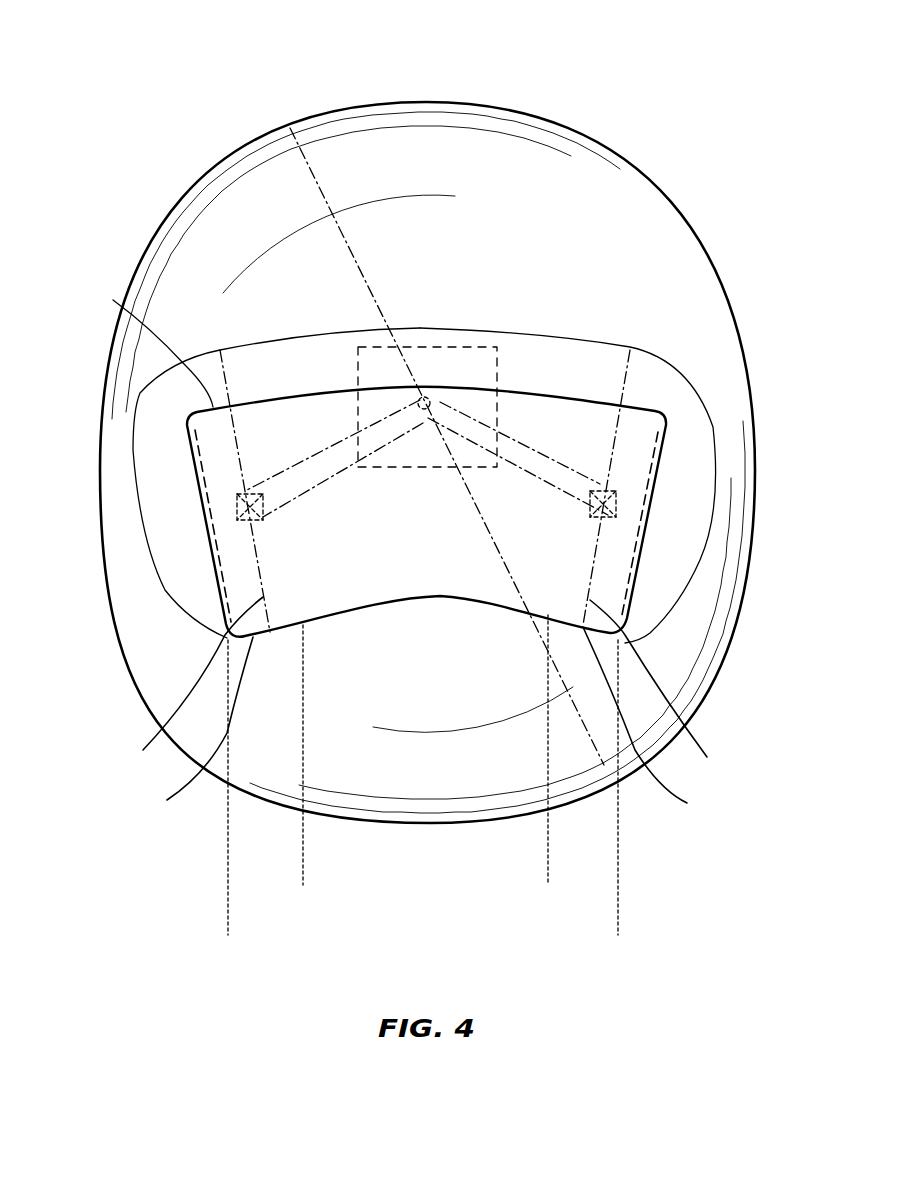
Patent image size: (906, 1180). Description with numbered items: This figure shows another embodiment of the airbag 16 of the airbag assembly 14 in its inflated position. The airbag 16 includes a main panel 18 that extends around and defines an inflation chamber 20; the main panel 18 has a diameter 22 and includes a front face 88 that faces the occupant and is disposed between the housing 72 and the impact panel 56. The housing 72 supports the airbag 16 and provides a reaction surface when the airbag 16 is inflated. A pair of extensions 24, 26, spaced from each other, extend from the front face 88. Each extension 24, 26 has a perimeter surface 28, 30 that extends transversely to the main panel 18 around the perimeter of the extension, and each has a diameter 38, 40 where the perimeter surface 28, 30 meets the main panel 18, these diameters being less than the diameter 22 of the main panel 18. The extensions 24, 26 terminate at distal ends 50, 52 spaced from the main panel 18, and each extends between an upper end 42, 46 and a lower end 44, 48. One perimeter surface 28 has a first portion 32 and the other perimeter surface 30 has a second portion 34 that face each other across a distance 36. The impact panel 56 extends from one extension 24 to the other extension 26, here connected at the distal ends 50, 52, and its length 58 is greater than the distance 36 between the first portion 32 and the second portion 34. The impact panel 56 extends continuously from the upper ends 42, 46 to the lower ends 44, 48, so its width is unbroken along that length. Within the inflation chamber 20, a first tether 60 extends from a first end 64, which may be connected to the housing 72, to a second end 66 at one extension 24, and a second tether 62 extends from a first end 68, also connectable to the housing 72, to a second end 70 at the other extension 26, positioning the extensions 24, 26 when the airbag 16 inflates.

The airbag assembly 14 is at (200, 163).
The airbag 16 is at (316, 88).
The main panel 18 is at (510, 160).
The inflation chamber 20 is at (418, 145).
The diameter of the main panel 22 is at (600, 765).
The extension 24 is at (160, 400).
The extension 26 is at (640, 367).
The perimeter surface 28 is at (163, 460).
The perimeter surface 30 is at (687, 437).
The first portion 32 is at (327, 390).
The second portion 34 is at (543, 387).
The distance 36 is at (548, 872).
The diameter 38 is at (143, 750).
The diameter 40 is at (707, 757).
The upper end 42 is at (113, 300).
The lower end 44 is at (167, 800).
The upper end 46 is at (683, 367).
The lower end 48 is at (687, 803).
The distal end 50 is at (232, 537).
The distal end 52 is at (623, 540).
The impact panel 56 is at (350, 413).
The length of the impact panel 58 is at (618, 923).
The first tether 60 is at (281, 507).
The second tether 62 is at (567, 505).
The first end of the first tether 64 is at (420, 400).
The second end of the first tether 66 is at (238, 505).
The first end of the second tether 68 is at (440, 400).
The second end of the second tether 70 is at (620, 505).
The housing 72 is at (440, 345).
The front face 88 is at (122, 524).